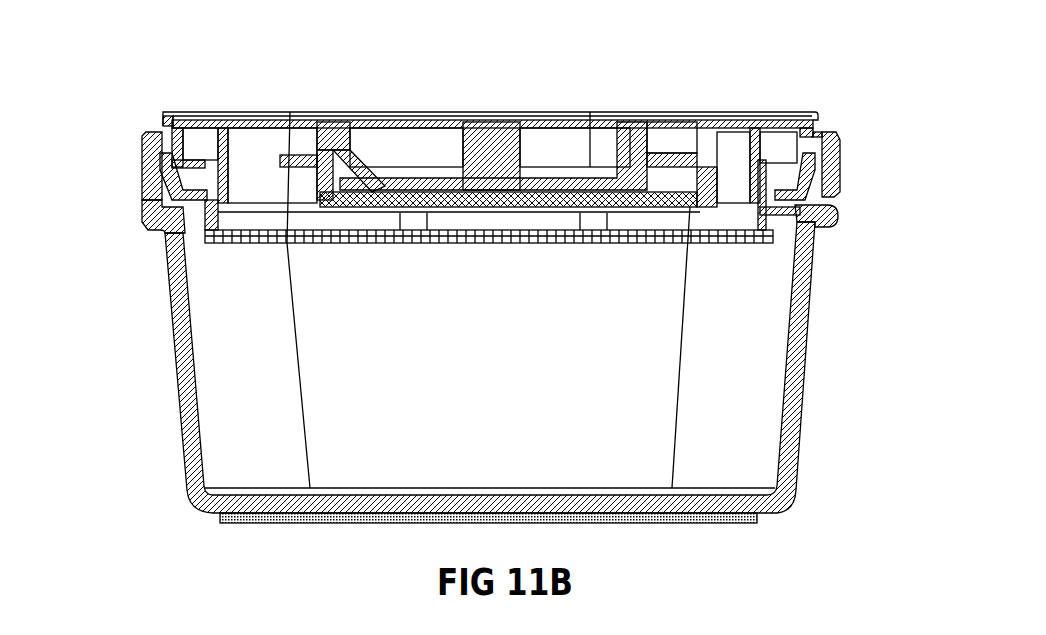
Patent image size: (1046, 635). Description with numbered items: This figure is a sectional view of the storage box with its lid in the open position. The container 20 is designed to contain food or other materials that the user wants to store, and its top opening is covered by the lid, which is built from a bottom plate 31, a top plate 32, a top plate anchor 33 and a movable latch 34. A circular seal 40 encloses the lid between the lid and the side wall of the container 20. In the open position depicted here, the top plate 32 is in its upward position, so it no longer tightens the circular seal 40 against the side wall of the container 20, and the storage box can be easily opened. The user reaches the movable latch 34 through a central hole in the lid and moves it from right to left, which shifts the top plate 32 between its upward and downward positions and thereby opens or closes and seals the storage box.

The container 20 is at (800, 403).
The bottom plate 31 is at (817, 235).
The top plate 32 is at (837, 150).
The top plate anchor 33 is at (317, 200).
The movable latch 34 is at (340, 110).
The circular seal 40 is at (833, 208).